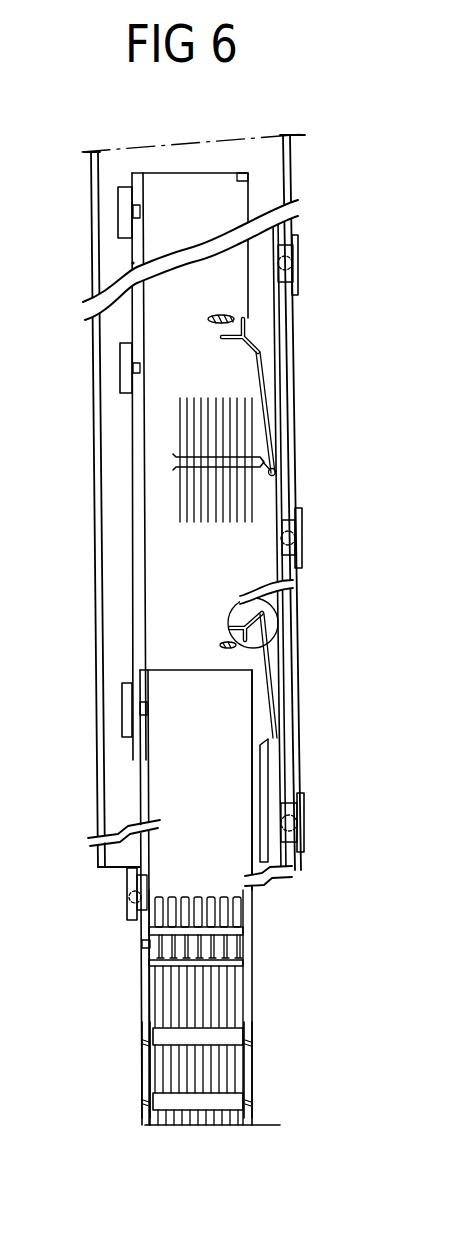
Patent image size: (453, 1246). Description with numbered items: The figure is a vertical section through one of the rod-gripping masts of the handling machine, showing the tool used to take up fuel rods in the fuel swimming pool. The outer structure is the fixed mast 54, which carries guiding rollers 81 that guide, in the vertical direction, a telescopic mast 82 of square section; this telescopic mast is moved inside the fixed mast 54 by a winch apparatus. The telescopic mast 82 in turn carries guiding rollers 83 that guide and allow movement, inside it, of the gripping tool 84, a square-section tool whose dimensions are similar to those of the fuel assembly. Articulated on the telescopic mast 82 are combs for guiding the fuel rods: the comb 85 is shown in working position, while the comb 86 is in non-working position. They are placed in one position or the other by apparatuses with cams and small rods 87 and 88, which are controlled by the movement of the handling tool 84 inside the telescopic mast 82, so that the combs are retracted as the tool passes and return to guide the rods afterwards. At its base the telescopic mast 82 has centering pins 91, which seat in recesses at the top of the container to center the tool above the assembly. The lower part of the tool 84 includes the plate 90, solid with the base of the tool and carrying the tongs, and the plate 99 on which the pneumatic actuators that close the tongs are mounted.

The fixed mast 54 is at (293, 662).
The guiding rollers 81 is at (305, 808).
The telescopic mast 82 is at (132, 262).
The guiding rollers 83 is at (126, 395).
The gripping tool 84 is at (175, 815).
The comb 85 is at (223, 465).
The comb 86 is at (270, 763).
The apparatus with cams and small rods 87 is at (260, 357).
The apparatus with cams and small rods 88 is at (276, 618).
The plate 90 is at (236, 961).
The centering pins 91 is at (248, 945).
The plate 99 is at (228, 931).